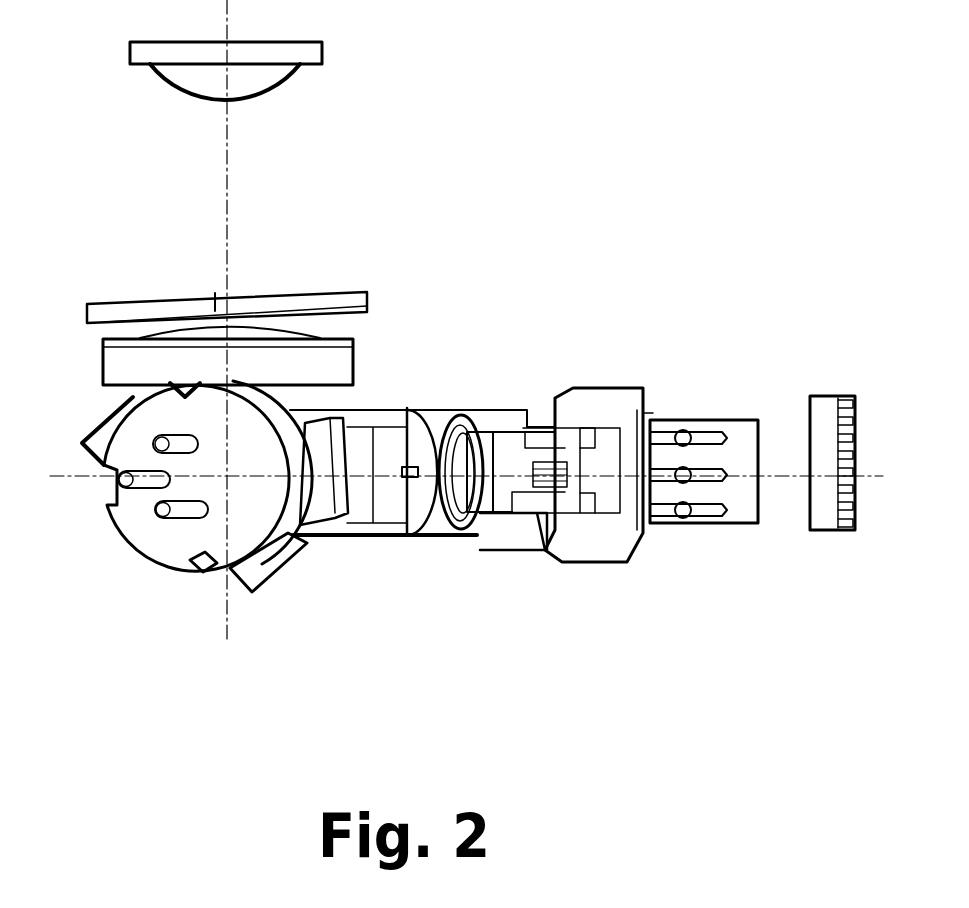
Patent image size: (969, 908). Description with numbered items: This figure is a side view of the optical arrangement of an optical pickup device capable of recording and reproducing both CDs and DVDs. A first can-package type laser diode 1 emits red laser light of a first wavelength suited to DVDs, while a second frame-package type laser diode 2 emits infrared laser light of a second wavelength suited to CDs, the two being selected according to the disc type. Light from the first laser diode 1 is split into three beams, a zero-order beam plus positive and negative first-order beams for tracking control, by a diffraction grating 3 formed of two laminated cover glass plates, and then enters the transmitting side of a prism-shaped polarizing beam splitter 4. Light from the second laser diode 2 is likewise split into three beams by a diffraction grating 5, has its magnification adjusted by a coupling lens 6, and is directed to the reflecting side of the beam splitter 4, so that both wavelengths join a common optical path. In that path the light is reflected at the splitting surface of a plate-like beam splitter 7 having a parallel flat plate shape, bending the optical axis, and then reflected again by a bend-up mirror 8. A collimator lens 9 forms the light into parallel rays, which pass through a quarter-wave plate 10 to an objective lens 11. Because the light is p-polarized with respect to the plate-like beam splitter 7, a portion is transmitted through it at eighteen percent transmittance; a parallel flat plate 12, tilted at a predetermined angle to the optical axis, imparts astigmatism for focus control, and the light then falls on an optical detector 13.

The first laser diode 1 is at (150, 542).
The second laser diode 2 is at (588, 562).
The diffraction grating 3 is at (328, 548).
The polarizing beam splitter 4 is at (388, 545).
The diffraction grating 5 is at (497, 540).
The coupling lens 6 is at (440, 545).
The plate-like beam splitter 7 is at (410, 410).
The bend-up mirror 8 is at (275, 570).
The collimator lens 9 is at (283, 353).
The quarter-wave plate 10 is at (250, 297).
The objective lens 11 is at (240, 79).
The parallel flat plate 12 is at (723, 420).
The optical detector 13 is at (828, 532).